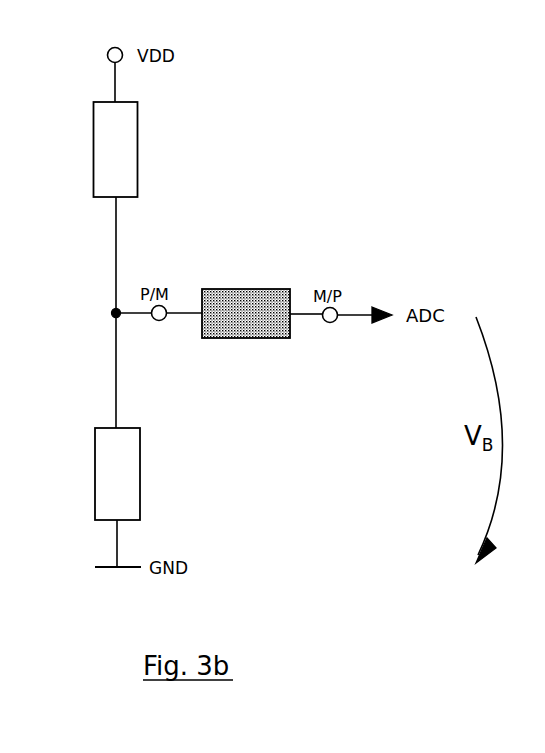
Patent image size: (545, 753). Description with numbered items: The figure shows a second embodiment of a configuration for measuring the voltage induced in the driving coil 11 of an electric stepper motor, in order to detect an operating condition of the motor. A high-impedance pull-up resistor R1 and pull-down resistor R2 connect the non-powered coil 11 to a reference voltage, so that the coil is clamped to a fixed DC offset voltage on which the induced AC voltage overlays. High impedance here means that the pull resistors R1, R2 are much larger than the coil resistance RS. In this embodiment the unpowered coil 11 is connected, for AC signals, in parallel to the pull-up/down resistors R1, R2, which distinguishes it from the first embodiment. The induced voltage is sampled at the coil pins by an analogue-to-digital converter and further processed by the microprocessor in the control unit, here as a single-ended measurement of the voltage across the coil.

The driving coil 11 is at (246, 335).
The pull-up resistor R1 is at (138, 149).
The pull-down resistor R2 is at (139, 474).
The coil resistance RS is at (246, 296).